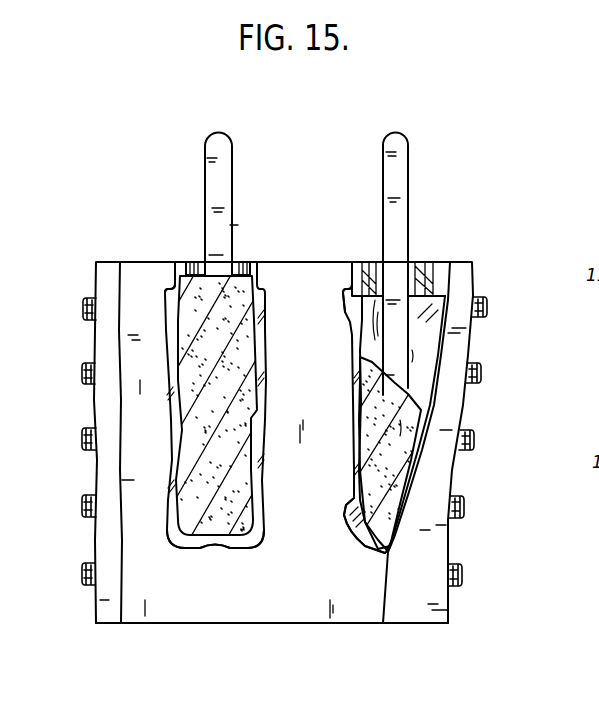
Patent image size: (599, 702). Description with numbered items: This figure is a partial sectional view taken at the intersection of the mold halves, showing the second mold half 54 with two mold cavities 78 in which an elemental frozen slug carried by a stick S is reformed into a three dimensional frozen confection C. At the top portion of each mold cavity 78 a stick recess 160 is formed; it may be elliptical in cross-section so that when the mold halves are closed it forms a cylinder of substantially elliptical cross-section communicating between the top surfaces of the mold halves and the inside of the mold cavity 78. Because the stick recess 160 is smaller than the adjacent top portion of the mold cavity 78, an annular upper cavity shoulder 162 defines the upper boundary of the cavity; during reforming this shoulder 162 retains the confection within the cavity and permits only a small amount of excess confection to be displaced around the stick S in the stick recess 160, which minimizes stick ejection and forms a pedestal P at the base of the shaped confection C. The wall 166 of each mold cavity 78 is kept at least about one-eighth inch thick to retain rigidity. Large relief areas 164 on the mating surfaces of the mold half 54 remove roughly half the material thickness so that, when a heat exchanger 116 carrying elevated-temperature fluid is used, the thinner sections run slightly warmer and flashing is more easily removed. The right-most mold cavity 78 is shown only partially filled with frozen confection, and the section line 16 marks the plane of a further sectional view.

The stick S is at (232, 166).
The pedestal P is at (243, 274).
The frozen confection C is at (256, 506).
The stick recess 160 is at (196, 261).
The upper cavity shoulder 162 is at (174, 300).
The mold cavity 78 is at (258, 425).
The wall 166 is at (260, 546).
The relief area 164 is at (236, 620).
The second mold half 54 is at (318, 620).
The heat exchanger 116 is at (412, 621).
The section line 16- 16 is at (76, 403).